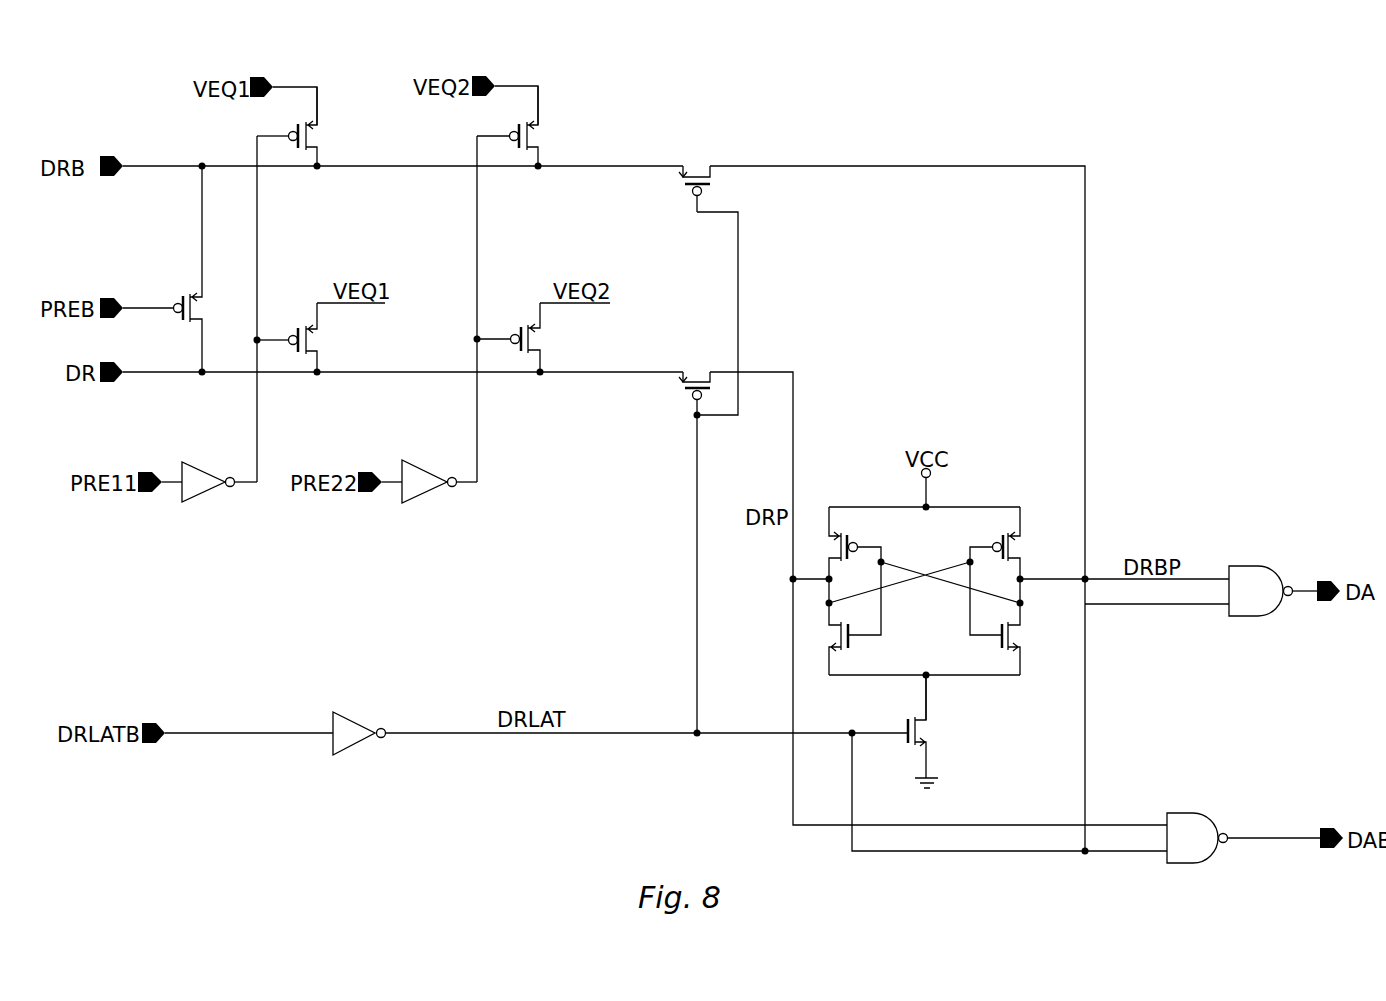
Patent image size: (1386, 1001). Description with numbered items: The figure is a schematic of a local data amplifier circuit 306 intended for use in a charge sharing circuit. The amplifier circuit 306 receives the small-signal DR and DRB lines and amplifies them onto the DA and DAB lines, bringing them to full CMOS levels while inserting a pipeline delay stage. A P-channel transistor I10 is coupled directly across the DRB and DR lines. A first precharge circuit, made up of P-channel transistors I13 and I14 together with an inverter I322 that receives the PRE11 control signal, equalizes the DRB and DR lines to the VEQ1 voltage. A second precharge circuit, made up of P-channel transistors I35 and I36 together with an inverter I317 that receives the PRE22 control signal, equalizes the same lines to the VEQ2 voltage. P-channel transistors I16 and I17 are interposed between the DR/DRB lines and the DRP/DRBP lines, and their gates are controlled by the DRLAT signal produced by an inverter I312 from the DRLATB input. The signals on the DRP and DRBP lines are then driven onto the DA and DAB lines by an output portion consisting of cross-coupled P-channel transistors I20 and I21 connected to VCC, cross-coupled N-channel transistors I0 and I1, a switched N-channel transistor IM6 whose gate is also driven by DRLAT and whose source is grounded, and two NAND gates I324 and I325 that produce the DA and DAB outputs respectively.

The local data amplifier circuit 306 is at (77, 98).
The P-channel transistor I13 is at (292, 126).
The P-channel transistor I10 is at (177, 269).
The P-channel transistor I14 is at (292, 337).
The P-channel transistor I35 is at (513, 126).
The P-channel transistor I36 is at (514, 337).
The P-channel transistor I17 is at (683, 189).
The P-channel transistor I16 is at (683, 394).
The inverter I322 is at (207, 468).
The inverter I317 is at (426, 468).
The inverter I312 is at (345, 719).
The cross-coupled P-channel transistor I21 is at (857, 571).
The cross-coupled P-channel transistor I20 is at (995, 571).
The cross-coupled N-channel transistor I1 is at (851, 627).
The cross-coupled N-channel transistor I0 is at (1001, 627).
The switched N-channel transistor IM6 is at (910, 731).
The NAND gate I324 is at (1258, 578).
The NAND gate I325 is at (1229, 825).